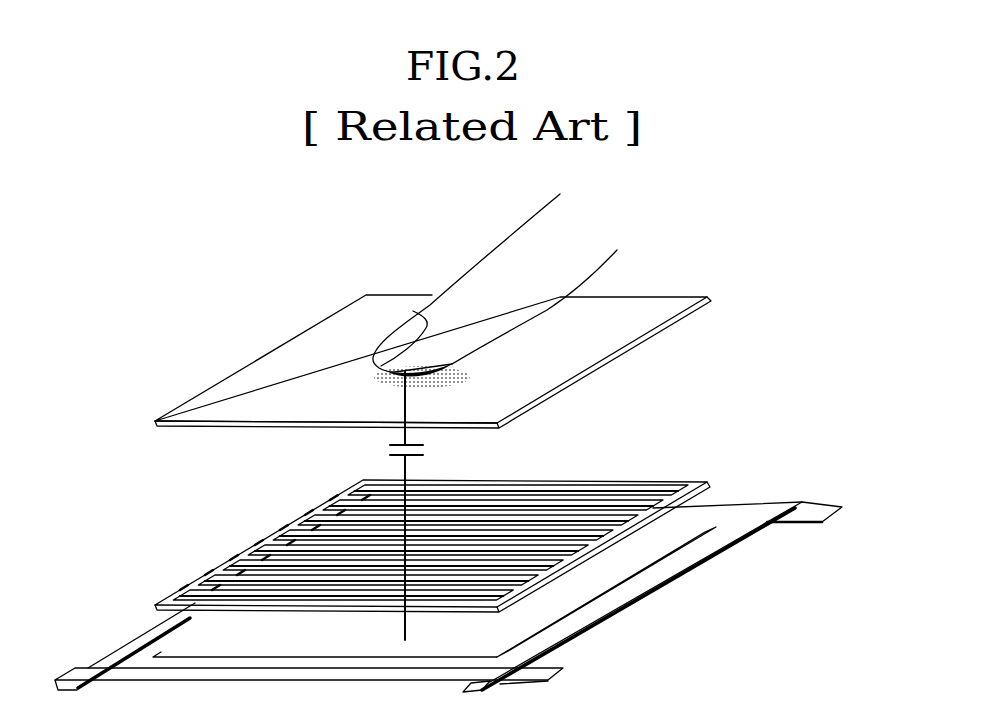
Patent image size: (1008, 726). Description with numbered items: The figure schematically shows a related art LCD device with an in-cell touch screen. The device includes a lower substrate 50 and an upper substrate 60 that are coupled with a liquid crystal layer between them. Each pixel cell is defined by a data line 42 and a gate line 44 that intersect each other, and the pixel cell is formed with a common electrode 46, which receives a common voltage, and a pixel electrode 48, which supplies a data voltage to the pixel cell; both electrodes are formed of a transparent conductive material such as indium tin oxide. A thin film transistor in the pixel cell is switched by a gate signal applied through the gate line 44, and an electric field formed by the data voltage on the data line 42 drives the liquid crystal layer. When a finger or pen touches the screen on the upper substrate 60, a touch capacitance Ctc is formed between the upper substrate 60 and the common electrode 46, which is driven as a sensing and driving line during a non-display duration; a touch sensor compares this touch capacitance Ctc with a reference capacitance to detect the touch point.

The upper substrate 60 is at (702, 293).
The pixel electrode 48 is at (543, 478).
The common electrode 46 is at (683, 537).
The lower substrate 50 is at (817, 487).
The data line 42 is at (613, 613).
The gate line 44 is at (552, 675).
The touch capacitance Ctc is at (423, 506).